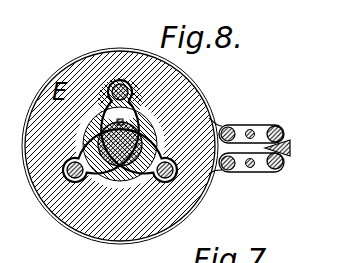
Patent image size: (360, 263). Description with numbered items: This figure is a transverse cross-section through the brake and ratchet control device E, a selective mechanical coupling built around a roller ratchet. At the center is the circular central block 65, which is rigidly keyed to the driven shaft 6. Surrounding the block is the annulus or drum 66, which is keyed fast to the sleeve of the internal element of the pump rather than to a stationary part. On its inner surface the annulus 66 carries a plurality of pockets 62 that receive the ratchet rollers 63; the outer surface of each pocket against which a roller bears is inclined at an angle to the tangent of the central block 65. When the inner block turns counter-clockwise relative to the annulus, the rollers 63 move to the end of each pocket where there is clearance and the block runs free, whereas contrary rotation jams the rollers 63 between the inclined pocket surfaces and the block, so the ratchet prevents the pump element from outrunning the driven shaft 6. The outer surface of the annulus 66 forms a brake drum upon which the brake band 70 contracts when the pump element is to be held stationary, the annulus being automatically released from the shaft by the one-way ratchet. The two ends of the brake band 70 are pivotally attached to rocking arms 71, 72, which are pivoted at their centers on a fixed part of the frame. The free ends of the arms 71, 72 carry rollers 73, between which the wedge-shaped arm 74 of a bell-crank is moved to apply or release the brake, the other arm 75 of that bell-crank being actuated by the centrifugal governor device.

The driven shaft 6 is at (127, 128).
The roller pockets 62 is at (109, 85).
The ratchet rollers 63 is at (125, 84).
The circular central block 65 is at (107, 182).
The annulus or drum 66 is at (195, 81).
The brake band 70 is at (201, 199).
The rocking arm 71 is at (244, 126).
The rocking arm 72 is at (247, 173).
The rollers 73 is at (279, 127).
The wedge-shaped bell-crank arm 74 is at (318, 154).
The bell-crank arm 75 is at (281, 162).